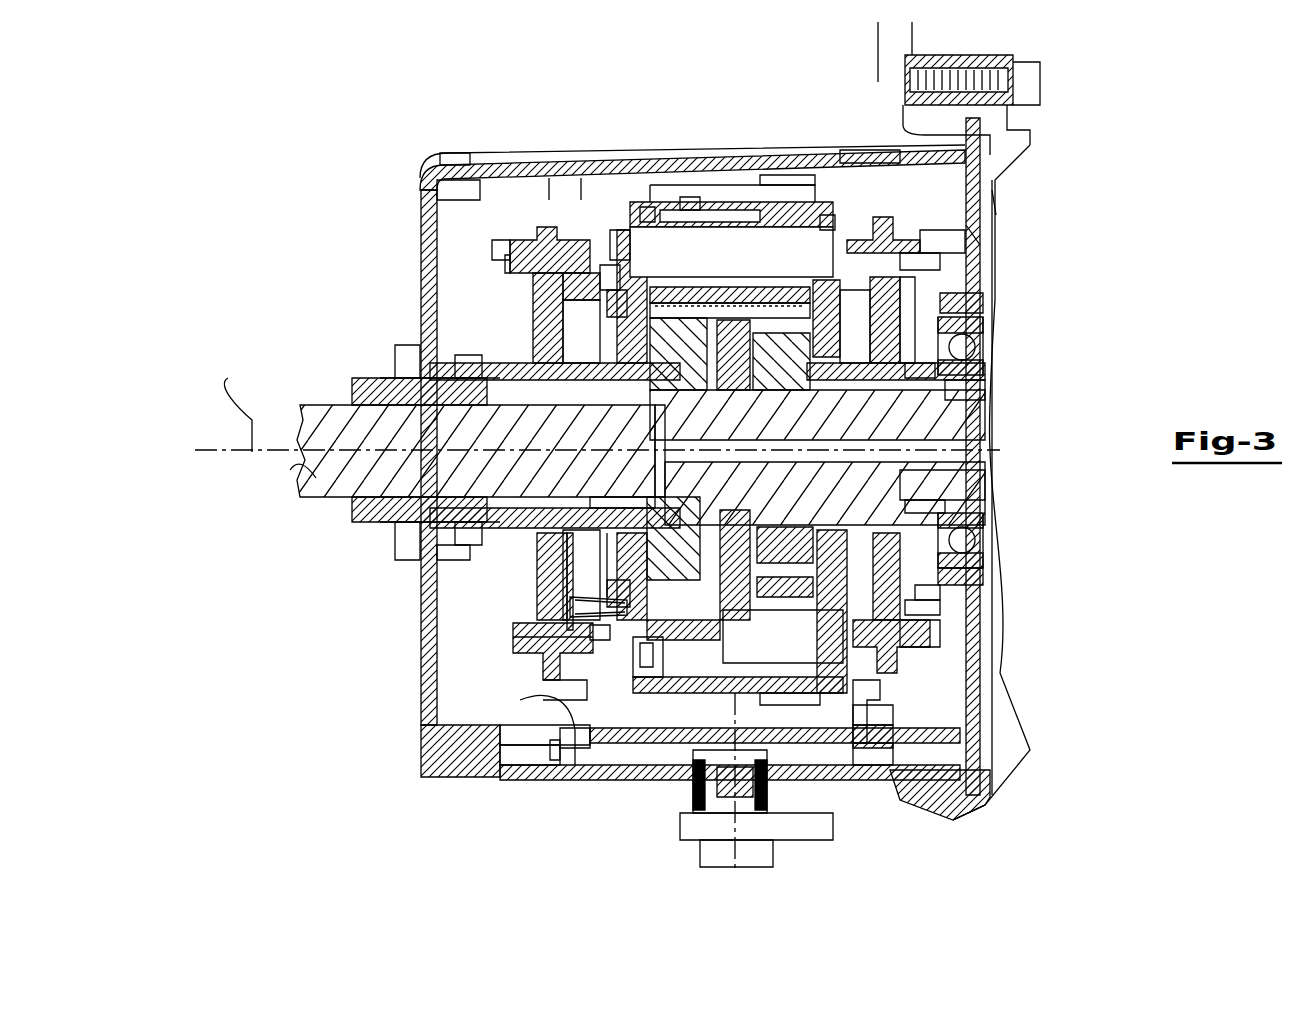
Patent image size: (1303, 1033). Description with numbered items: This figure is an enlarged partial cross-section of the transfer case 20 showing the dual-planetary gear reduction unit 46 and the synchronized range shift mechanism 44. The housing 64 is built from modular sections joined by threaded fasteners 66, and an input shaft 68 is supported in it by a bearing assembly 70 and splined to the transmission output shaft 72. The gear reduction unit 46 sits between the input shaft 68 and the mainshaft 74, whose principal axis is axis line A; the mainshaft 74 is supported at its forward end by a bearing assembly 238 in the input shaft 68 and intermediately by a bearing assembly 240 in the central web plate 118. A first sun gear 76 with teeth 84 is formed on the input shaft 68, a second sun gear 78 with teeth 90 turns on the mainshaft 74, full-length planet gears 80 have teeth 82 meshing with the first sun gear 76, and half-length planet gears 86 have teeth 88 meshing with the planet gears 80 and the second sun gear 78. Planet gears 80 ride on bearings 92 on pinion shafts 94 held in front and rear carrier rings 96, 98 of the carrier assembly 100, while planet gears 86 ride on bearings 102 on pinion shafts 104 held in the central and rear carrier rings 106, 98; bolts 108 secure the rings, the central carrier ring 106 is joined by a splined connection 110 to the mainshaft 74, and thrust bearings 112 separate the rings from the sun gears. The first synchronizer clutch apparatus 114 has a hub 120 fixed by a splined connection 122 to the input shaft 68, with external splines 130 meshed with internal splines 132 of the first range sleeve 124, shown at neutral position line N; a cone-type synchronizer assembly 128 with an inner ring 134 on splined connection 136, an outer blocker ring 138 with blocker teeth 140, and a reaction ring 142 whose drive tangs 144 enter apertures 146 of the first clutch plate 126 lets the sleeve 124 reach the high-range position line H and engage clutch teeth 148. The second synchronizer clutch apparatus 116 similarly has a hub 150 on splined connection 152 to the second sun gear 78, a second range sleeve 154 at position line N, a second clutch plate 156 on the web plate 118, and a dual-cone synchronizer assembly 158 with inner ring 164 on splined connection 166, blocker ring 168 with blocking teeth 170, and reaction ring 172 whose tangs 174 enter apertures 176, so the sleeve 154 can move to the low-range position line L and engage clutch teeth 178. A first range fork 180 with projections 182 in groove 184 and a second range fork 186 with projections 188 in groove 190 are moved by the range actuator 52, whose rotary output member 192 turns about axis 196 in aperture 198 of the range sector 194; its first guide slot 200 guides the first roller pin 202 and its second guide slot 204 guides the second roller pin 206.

The transfer case 20 is at (728, 137).
The synchronized range shift mechanism 44 is at (478, 200).
The dual-planetary gear reduction unit 46 is at (790, 172).
The range actuator 52 is at (680, 842).
The housing 64 is at (452, 162).
The threaded fasteners 66 is at (1025, 92).
The input shaft 68 is at (345, 374).
The bearing assembly 70 is at (545, 332).
The transmission output shaft 72 is at (300, 478).
The mainshaft 74 is at (965, 420).
The first sun gear 76 is at (718, 320).
The second sun gear 78 is at (870, 160).
The first planet gears 80 is at (690, 200).
The teeth 82 is at (745, 200).
The teeth 84 is at (680, 695).
The second planet gears 86 is at (860, 745).
The teeth 88 is at (800, 700).
The teeth 90 is at (858, 350).
The bearings 92 is at (768, 200).
The pinion shaft 94 is at (770, 264).
The front carrier ring 96 is at (660, 205).
The rear carrier ring 98 is at (828, 220).
The carrier assembly 100 is at (622, 262).
The bearings 102 is at (870, 665).
The pinion shaft 104 is at (832, 640).
The central carrier ring 106 is at (728, 695).
The bolts 108 is at (470, 748).
The splined connection 110 is at (722, 395).
The thrust bearings 112 is at (640, 355).
The first synchronizer clutch apparatus 114 is at (525, 292).
The second synchronizer clutch apparatus 116 is at (915, 312).
The central web plate 118 is at (975, 232).
The hub 120 is at (570, 585).
The splined connection 122 is at (600, 500).
The first range sleeve 124 is at (497, 235).
The first clutch plate 126 is at (528, 313).
The cone-type synchronizer assembly 128 is at (395, 385).
The external longitudinal splines 130 is at (565, 665).
The internal longitudinal splines 132 is at (430, 195).
The inner ring 134 is at (537, 578).
The splined connection 136 is at (600, 495).
The outer blocker ring 138 is at (590, 630).
The blocker teeth 140 is at (540, 718).
The reaction ring 142 is at (590, 603).
The drive tangs 144 is at (625, 282).
The apertures 146 is at (638, 285).
The clutch teeth 148 is at (620, 230).
The hub 150 is at (945, 370).
The splined connection 152 is at (950, 400).
The second range sleeve 154 is at (920, 240).
The second clutch plate 156 is at (890, 270).
The dual-cone synchronizer assembly 158 is at (975, 340).
The inner ring 164 is at (975, 535).
The splined connection 166 is at (905, 480).
The blocker ring 168 is at (940, 562).
The blocking teeth 170 is at (910, 635).
The reaction ring 172 is at (915, 292).
The tangs 174 is at (935, 610).
The apertures 176 is at (925, 592).
The clutch teeth 178 is at (905, 255).
The first range fork 180 is at (525, 765).
The projections 182 is at (512, 228).
The groove 184 is at (556, 228).
The second range fork 186 is at (860, 690).
The projections 188 is at (990, 205).
The groove 190 is at (893, 235).
The rotary output member 192 is at (695, 790).
The range sector 194 is at (895, 722).
The axis 196 is at (745, 852).
The aperture 198 is at (712, 830).
The first guide slot 200 is at (565, 780).
The first roller pin 202 is at (542, 765).
The second guide slot 204 is at (890, 738).
The second roller pin 206 is at (985, 808).
The bearing assembly 238 is at (650, 445).
The bearing assembly 240 is at (940, 505).
The axis line A is at (245, 404).
The neutral position line N is at (732, 107).
The high-range position line H is at (592, 185).
The low-range position line L is at (866, 49).